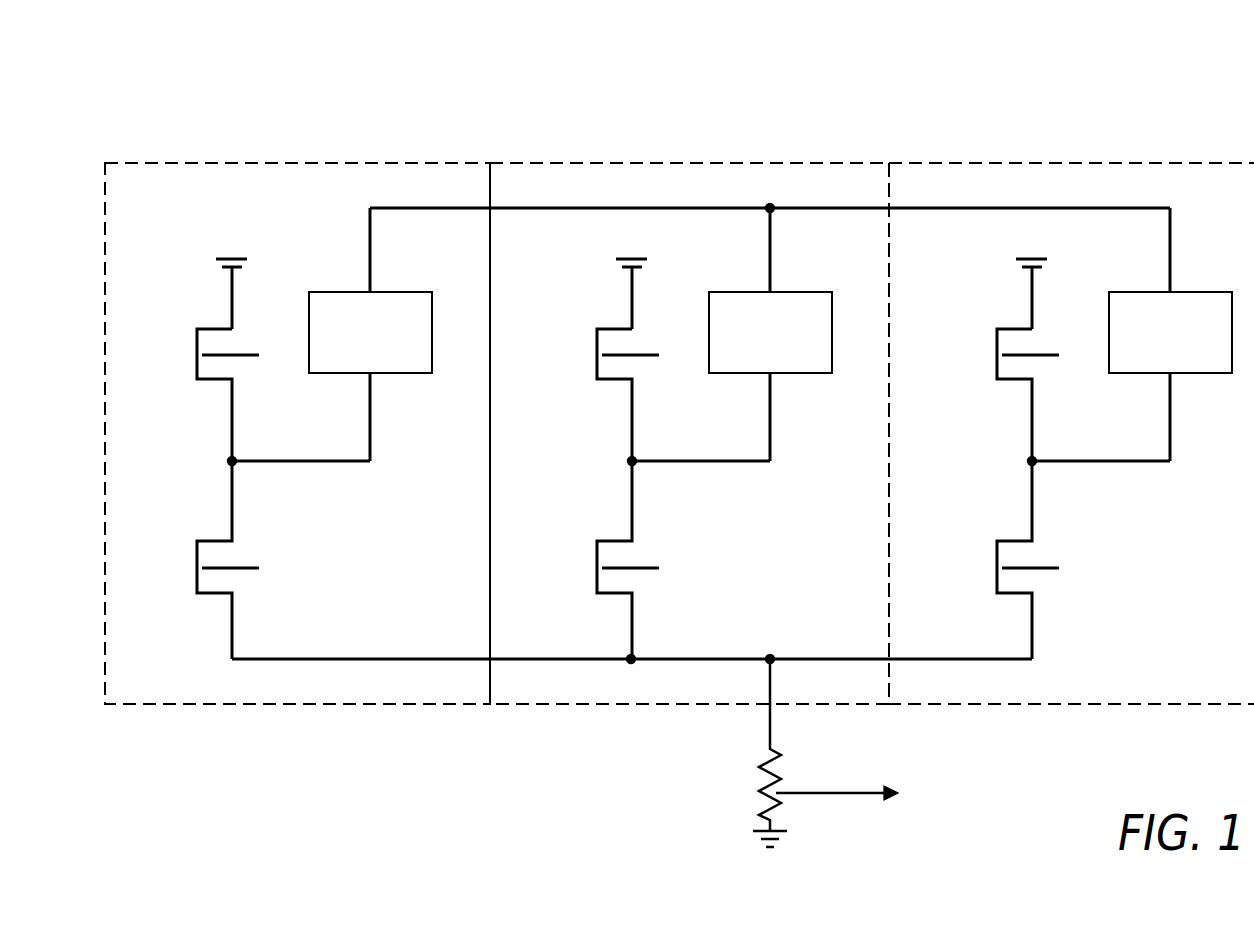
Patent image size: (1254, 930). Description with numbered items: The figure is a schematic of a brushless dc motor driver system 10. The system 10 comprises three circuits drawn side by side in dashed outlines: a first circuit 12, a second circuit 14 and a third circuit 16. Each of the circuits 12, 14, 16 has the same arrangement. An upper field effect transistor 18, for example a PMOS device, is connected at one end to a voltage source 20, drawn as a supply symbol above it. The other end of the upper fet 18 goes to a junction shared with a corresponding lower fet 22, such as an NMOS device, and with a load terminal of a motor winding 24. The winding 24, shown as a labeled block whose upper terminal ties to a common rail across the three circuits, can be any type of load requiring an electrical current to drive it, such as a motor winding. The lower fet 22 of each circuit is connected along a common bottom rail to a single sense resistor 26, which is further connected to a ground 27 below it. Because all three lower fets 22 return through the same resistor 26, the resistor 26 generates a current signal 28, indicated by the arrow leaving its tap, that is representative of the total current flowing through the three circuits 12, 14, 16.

The brushless dc motor driver system 10 is at (980, 87).
The first circuit 12 is at (304, 163).
The second circuit 14 is at (673, 163).
The third circuit 16 is at (1097, 163).
The upper field effect transistor 18 is at (197, 364).
The voltage source 20 is at (213, 268).
The lower field effect transistor 22 is at (197, 580).
The motor winding 24 is at (405, 375).
The sense resistor 26 is at (760, 775).
The ground 27 is at (762, 831).
The current signal 28 is at (854, 795).